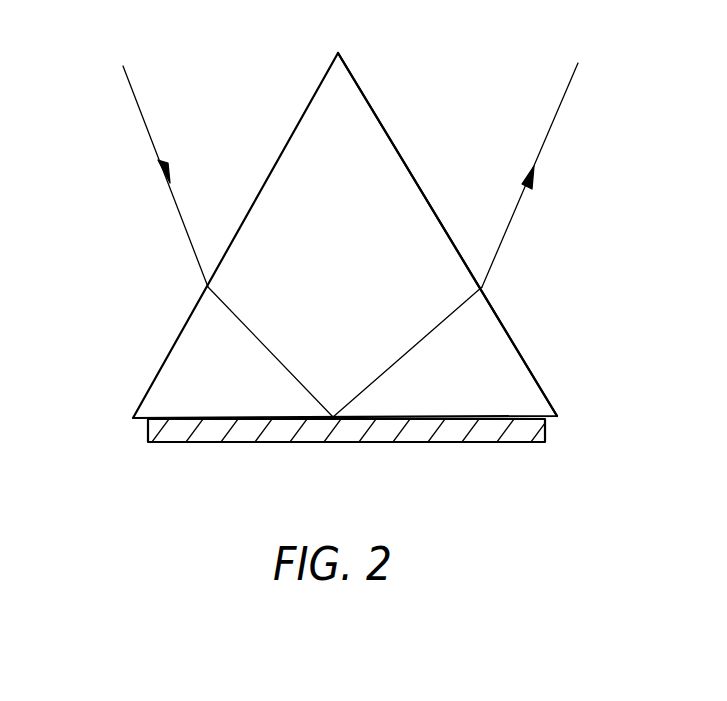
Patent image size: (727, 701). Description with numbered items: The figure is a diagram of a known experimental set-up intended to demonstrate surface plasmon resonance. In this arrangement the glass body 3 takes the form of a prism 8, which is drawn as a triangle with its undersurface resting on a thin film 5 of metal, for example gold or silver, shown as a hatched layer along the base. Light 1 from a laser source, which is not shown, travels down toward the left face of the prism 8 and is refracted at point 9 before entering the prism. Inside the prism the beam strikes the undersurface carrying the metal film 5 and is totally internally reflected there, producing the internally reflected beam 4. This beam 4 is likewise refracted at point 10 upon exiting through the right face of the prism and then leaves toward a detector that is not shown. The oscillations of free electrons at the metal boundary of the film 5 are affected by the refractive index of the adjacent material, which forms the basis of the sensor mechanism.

The beam of light 1 is at (162, 172).
The glass body 3 is at (347, 269).
The internally reflected beam 4 is at (533, 172).
The thin film of metal 5 is at (522, 428).
The prism 8 is at (380, 115).
The point of refraction on entry 9 is at (208, 286).
The point of refraction on exit 10 is at (483, 287).